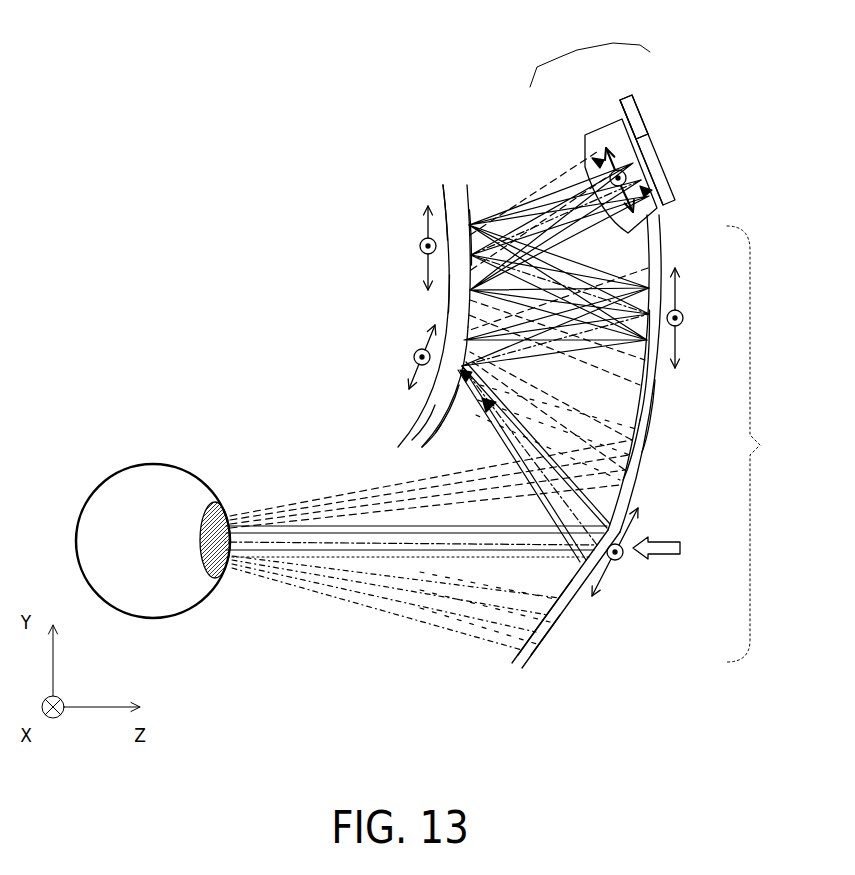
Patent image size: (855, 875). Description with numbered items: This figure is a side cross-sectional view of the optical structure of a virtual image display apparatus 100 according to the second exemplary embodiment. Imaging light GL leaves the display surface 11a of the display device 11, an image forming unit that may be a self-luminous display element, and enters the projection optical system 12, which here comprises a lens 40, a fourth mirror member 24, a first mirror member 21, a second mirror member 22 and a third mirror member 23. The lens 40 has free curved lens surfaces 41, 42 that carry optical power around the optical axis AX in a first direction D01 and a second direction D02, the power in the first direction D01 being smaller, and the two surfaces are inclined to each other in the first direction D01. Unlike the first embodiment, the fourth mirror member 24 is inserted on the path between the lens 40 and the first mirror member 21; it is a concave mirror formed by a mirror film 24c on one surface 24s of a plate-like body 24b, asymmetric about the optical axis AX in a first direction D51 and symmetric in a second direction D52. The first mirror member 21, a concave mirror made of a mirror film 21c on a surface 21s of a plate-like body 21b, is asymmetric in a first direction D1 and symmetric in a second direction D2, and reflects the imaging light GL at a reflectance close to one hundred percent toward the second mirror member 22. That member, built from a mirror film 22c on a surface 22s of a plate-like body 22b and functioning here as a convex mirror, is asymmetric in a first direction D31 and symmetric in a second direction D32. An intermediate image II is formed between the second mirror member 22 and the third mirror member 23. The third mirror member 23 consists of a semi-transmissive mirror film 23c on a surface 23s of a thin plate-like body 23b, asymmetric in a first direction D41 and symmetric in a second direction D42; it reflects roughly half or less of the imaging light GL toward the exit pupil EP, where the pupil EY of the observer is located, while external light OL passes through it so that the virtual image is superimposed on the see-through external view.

The virtual image display apparatus 100 is at (247, 130).
The lens 40 is at (590, 55).
The lens surface 41 is at (577, 133).
The lens surface 42 is at (637, 125).
The display device 11 is at (645, 123).
The display surface 11a is at (652, 132).
The projection optical system 12 is at (760, 444).
The first mirror member 21 is at (676, 244).
The mirror film 21c is at (647, 367).
The surface 21s is at (645, 403).
The plate-like body 21b is at (641, 421).
The second mirror member 22 is at (337, 356).
The mirror film 22c is at (440, 410).
The plate-like body 22b is at (433, 422).
The surface 22s is at (430, 436).
The third mirror member 23 is at (506, 676).
The mirror film 23c is at (553, 635).
The plate-like body 23b is at (541, 647).
The surface 23s is at (560, 598).
The fourth mirror member 24 is at (333, 221).
The mirror film 24c is at (470, 232).
The plate-like body 24b is at (455, 187).
The surface 24s is at (449, 297).
The first direction D01 is at (604, 156).
The second direction D02 is at (609, 178).
The first direction D1 is at (681, 292).
The second direction D2 is at (683, 327).
The first direction D31 is at (422, 340).
The second direction D32 is at (416, 355).
The first direction D41 is at (642, 526).
The second direction D42 is at (612, 575).
The first direction D51 is at (421, 226).
The second direction D52 is at (420, 246).
The pupil EY is at (207, 503).
The exit pupil EP is at (233, 575).
The imaging light GL is at (368, 600).
The optical axis AX is at (412, 618).
The external light OL is at (655, 558).
The intermediate image II is at (443, 472).